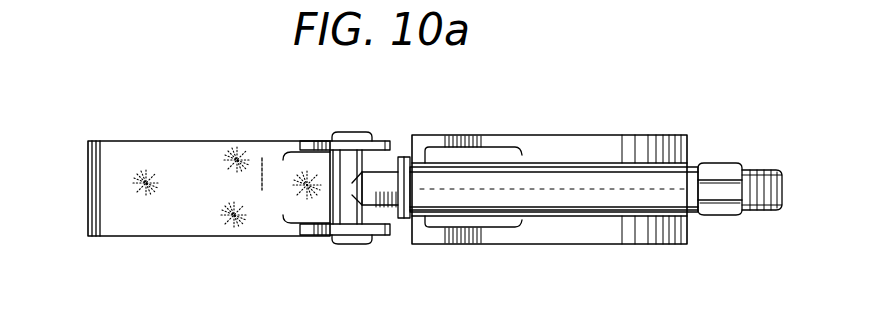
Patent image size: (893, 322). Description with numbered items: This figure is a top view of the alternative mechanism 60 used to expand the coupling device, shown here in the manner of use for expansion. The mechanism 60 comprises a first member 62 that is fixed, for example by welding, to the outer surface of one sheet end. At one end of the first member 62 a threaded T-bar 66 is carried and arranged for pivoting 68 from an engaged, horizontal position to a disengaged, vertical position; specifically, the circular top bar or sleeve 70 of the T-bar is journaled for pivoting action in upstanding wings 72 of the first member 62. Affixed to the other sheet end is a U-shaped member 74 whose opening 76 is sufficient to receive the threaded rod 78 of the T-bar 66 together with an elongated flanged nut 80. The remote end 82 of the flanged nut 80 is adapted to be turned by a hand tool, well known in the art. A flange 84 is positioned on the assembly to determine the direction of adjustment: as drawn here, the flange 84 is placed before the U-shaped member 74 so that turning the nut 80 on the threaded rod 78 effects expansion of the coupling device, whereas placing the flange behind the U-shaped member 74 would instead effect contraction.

The mechanism 60 is at (458, 246).
The first member 62 is at (178, 148).
The threaded T-bar 66 is at (392, 171).
The pivoting 68 is at (362, 131).
The top bar or sleeve 70 is at (343, 212).
The upstanding wings 72 is at (328, 140).
The U-shaped member 74 is at (430, 134).
The opening 76 is at (450, 153).
The threaded rod 78 is at (770, 169).
The elongated flanged nut 80 is at (588, 178).
The remote end 82 is at (720, 215).
The flange 84 is at (405, 220).